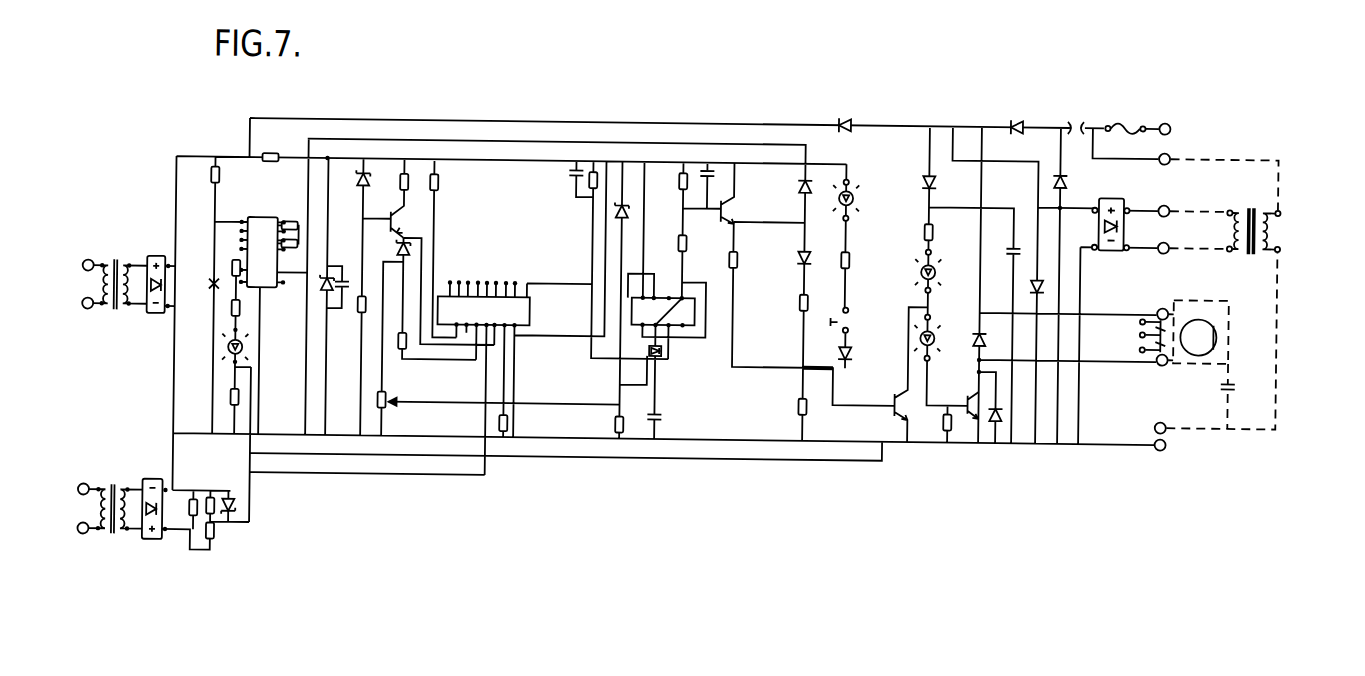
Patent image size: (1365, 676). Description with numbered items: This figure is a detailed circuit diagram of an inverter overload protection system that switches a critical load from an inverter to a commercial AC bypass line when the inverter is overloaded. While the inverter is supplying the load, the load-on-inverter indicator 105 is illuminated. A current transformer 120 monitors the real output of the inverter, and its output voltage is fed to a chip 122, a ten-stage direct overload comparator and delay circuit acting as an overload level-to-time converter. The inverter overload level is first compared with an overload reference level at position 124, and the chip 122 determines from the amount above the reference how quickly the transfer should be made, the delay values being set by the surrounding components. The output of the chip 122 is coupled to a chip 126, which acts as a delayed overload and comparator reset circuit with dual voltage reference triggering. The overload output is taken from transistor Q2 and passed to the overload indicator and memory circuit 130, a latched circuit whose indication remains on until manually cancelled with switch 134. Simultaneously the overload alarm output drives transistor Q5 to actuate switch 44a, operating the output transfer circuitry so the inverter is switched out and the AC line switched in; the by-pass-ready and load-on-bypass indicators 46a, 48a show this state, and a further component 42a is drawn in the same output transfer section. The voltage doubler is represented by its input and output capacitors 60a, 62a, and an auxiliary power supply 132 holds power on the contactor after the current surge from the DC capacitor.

The load-on-inverter indicator 105 is at (246, 347).
The current transformer 120 is at (121, 558).
The chip 122 is at (531, 342).
The position 124 is at (404, 250).
The chip 126 is at (699, 273).
The overload indicator and memory circuit 130 is at (856, 180).
The auxiliary power supply 132 is at (1287, 215).
The switch 134 is at (832, 319).
The diode 42a is at (989, 436).
The switch 44a is at (1148, 362).
The by-pass-ready indicator 46a is at (902, 261).
The load-on-bypass indicator 48a is at (914, 327).
The input capacitor 60a is at (1080, 112).
The output capacitor 62a is at (1237, 368).
The transistor Q2 is at (737, 195).
The switch transistor Q5 is at (891, 374).